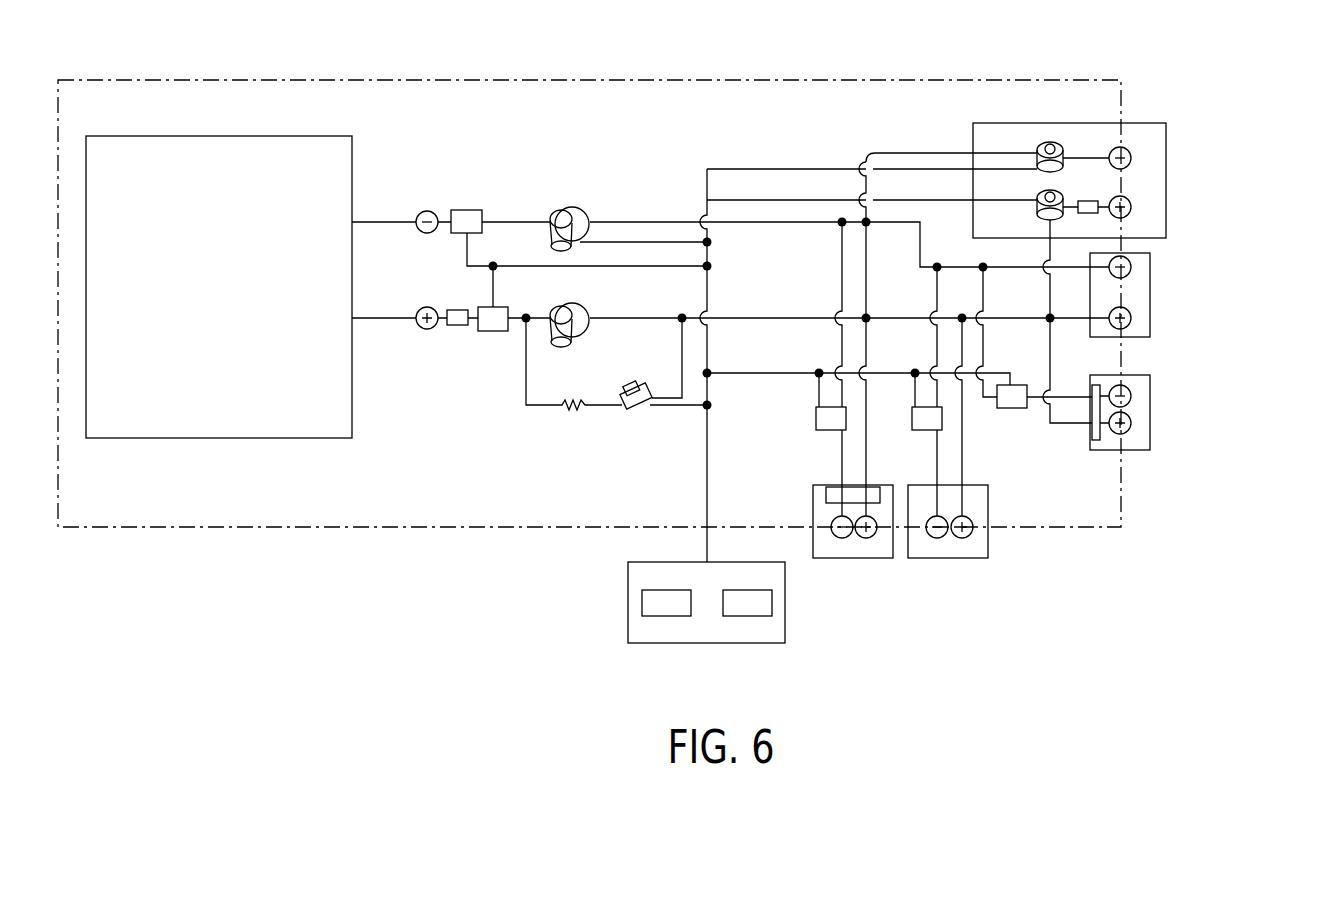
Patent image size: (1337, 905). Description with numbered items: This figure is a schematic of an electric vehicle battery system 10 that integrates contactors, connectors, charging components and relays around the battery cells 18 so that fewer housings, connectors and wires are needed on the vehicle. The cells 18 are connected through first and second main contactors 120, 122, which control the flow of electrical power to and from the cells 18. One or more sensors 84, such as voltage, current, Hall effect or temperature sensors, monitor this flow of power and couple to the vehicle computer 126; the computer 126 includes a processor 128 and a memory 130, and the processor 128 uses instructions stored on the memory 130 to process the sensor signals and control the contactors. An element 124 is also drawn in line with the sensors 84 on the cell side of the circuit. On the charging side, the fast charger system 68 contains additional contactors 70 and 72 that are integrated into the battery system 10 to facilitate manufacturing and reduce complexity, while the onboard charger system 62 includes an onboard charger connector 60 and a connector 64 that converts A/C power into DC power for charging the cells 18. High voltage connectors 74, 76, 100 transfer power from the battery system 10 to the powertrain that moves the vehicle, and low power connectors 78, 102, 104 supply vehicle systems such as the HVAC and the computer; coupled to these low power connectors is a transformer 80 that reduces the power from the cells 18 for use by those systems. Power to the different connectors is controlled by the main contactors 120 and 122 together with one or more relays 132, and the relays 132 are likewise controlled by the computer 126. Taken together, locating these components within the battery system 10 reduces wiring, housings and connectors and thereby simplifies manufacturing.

The electric vehicle battery system 10 is at (1078, 42).
The battery cells 18 is at (219, 135).
The onboard charger connector 60 is at (842, 540).
The onboard charger system 62 is at (881, 533).
The connector 64 is at (836, 488).
The fast charger system 68 is at (1166, 212).
The contactor 70 is at (1050, 141).
The contactor 72 is at (1062, 199).
The connector 74 is at (1197, 295).
The connector 76 is at (1120, 267).
The connector 100 is at (1120, 318).
The connector 78 is at (1187, 435).
The connector 102 is at (1120, 396).
The connector 104 is at (1120, 423).
The transformer 80 is at (1092, 432).
The sensors 84 is at (468, 209).
The first main contactor 120 is at (572, 206).
The second main contactor 122 is at (576, 340).
The resistor 124 is at (458, 310).
The vehicle computer 126 is at (669, 627).
The processor 128 is at (665, 618).
The memory 130 is at (747, 618).
The relays 132 is at (816, 413).